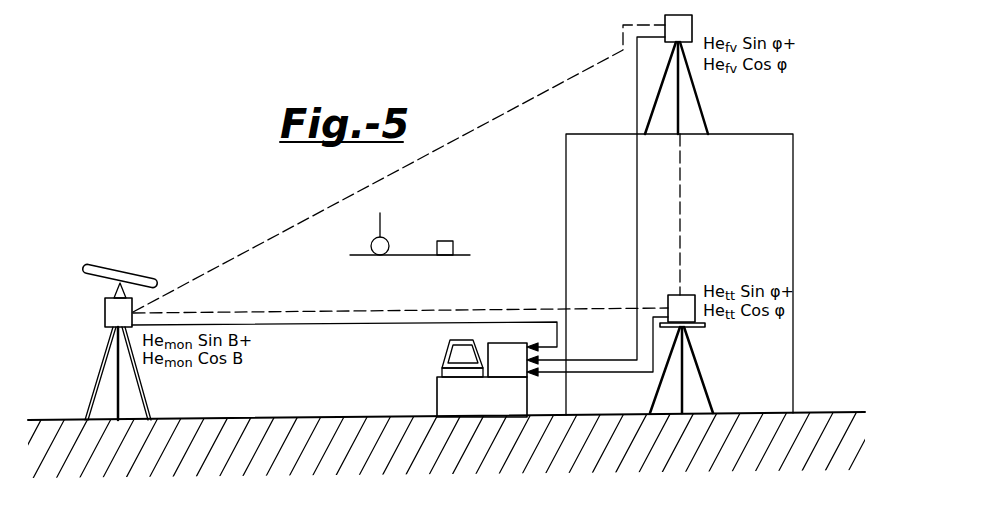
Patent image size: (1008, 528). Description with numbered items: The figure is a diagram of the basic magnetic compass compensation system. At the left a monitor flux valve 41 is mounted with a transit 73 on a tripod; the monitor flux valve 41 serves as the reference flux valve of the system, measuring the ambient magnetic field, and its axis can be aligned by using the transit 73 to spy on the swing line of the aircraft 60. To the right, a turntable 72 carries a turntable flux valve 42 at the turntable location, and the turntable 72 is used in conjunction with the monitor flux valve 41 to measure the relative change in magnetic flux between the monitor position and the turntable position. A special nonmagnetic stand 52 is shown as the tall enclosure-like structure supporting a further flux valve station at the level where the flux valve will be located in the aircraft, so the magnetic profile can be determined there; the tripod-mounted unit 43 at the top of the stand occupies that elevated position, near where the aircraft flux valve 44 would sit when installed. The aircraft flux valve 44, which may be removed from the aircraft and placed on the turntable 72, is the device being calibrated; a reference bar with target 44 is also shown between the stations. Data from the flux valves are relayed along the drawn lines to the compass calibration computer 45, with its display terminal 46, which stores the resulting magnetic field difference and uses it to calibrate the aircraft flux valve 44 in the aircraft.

The monitor flux valve 41 is at (105, 316).
The turntable flux valve 42 is at (695, 295).
The third tracking station 43 is at (692, 18).
The aircraft flux valve 44 is at (443, 241).
The compass calibration computer 45 is at (507, 343).
The display terminal 46 is at (442, 350).
The nonmagnetic stand 52 is at (564, 212).
The aircraft 60 is at (363, 257).
The turntable 72 is at (703, 328).
The transit 73 is at (95, 261).